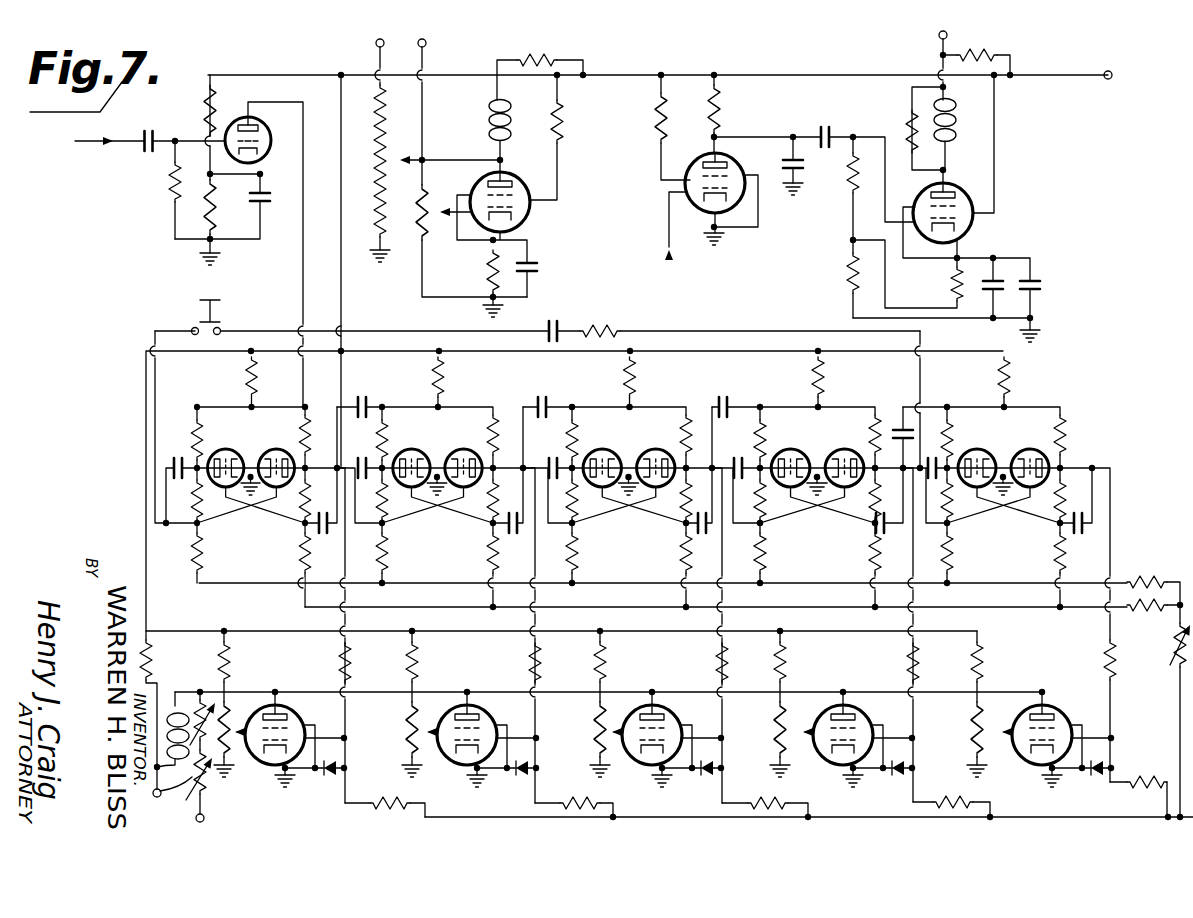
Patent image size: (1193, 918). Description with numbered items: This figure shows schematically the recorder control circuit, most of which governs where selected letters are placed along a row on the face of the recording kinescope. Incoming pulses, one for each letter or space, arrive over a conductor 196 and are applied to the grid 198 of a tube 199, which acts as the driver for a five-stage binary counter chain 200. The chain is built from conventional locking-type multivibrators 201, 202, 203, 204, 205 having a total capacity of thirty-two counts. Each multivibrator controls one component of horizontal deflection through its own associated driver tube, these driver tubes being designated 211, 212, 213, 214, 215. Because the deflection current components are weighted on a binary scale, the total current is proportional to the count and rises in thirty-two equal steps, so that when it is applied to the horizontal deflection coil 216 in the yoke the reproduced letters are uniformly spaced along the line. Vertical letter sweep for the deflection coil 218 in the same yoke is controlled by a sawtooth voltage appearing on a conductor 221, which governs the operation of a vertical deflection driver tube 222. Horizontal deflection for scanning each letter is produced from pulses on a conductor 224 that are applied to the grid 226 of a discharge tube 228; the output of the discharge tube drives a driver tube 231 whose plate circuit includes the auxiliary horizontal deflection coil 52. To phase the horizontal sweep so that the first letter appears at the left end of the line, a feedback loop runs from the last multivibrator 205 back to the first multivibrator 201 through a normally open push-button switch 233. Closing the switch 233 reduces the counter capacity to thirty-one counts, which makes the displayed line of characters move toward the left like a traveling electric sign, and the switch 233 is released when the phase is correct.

The conductor 196 is at (135, 143).
The grid 198 is at (271, 141).
The tube 199 is at (264, 156).
The push-button switch 233 is at (198, 312).
The conductor 221 is at (424, 58).
The deflection coil 218 is at (490, 123).
The vertical deflection driver tube 222 is at (531, 214).
The conductor 224 is at (664, 225).
The grid 226 is at (742, 196).
The discharge tube 228 is at (727, 154).
The auxiliary horizontal deflection coil 52 is at (958, 118).
The driver tube 231 is at (968, 190).
The counter chain 200 is at (138, 494).
The multivibrator 201 is at (233, 382).
The multivibrator 202 is at (416, 400).
The multivibrator 203 is at (603, 397).
The multivibrator 204 is at (801, 397).
The multivibrator 205 is at (985, 395).
The driver tube 211 is at (303, 712).
The driver tube 212 is at (485, 714).
The driver tube 213 is at (692, 684).
The driver tube 214 is at (893, 688).
The driver tube 215 is at (1050, 704).
The horizontal deflection coil 216 is at (179, 729).